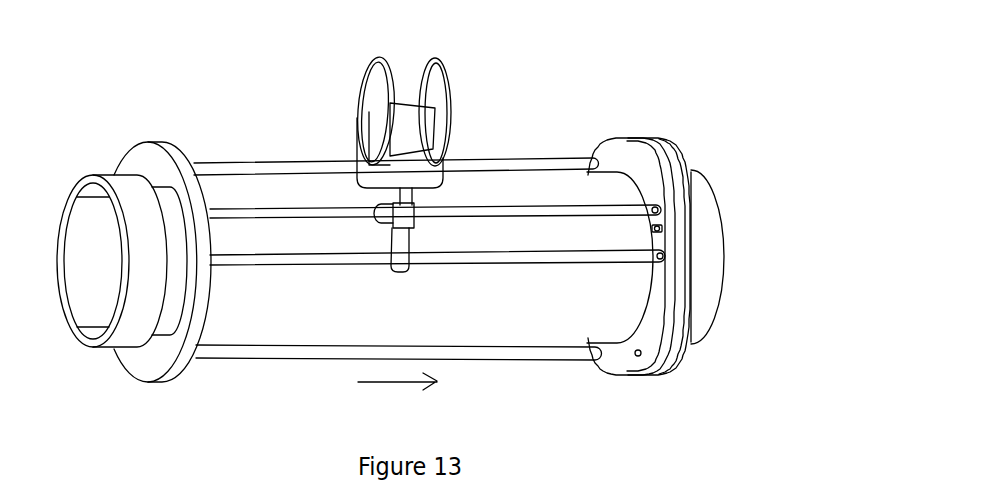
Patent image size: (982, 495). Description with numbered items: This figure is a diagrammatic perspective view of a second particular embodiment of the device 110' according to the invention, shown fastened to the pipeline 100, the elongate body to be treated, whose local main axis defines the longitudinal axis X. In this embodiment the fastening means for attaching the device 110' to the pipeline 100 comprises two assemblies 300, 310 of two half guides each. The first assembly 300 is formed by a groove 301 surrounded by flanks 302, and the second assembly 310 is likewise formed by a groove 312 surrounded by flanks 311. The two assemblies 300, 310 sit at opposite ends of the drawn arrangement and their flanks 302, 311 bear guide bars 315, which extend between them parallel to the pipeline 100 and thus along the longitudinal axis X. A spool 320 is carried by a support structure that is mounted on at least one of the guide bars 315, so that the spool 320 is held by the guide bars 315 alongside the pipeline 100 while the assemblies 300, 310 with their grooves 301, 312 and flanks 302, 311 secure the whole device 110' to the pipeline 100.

The pipeline 100 is at (712, 244).
The device 110' is at (437, 244).
The assembly 300 is at (148, 122).
The groove 301 is at (163, 383).
The flanks 302 is at (190, 370).
The assembly 310 is at (628, 125).
The flanks 311 is at (615, 370).
The groove 312 is at (658, 360).
The guide bars 315 is at (290, 218).
The spool 320 is at (450, 90).